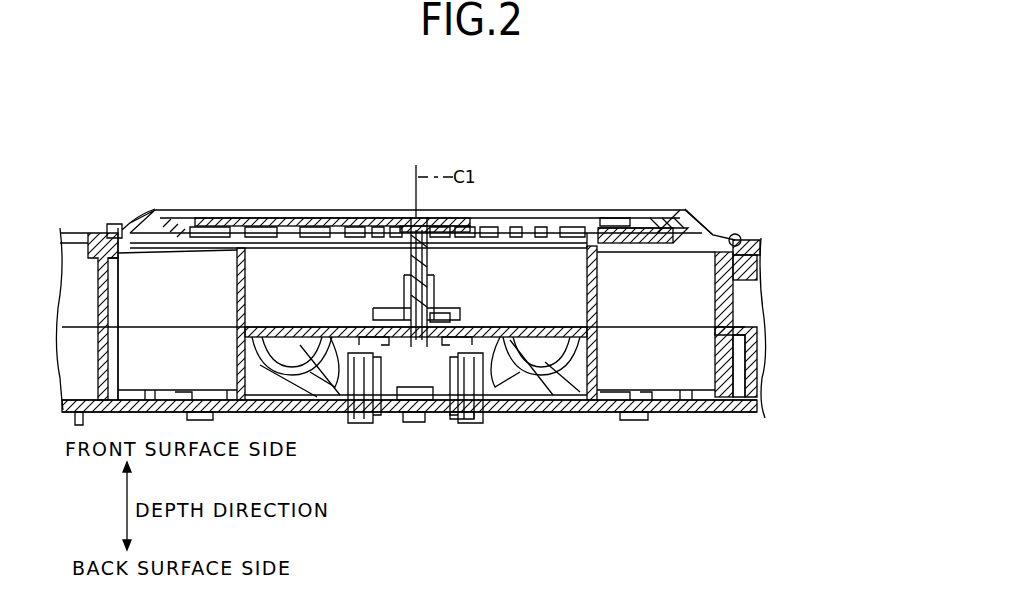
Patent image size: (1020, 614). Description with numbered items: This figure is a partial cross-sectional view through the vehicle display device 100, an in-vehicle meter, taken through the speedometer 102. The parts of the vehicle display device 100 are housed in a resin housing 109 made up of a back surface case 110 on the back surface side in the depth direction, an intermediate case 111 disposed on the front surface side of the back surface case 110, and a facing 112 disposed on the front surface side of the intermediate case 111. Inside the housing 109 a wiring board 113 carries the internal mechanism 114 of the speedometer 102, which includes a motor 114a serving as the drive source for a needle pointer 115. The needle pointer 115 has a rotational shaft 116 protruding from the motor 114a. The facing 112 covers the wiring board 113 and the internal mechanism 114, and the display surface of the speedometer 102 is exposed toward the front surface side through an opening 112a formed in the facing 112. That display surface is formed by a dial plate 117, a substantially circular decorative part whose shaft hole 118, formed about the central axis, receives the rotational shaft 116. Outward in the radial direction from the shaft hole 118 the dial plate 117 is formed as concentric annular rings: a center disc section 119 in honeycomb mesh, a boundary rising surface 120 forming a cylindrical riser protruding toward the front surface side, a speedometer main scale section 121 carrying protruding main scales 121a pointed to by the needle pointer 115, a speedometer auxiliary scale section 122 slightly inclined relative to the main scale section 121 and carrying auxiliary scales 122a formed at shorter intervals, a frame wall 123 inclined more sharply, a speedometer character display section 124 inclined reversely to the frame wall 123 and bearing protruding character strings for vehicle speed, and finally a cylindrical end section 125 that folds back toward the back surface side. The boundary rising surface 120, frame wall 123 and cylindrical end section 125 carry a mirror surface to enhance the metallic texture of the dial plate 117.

The vehicle display device 100 is at (177, 190).
The speedometer 102 is at (520, 207).
The housing 109 is at (832, 213).
The back surface case 110 is at (769, 354).
The intermediate case 111 is at (765, 270).
The facing 112 is at (759, 235).
The opening 112a is at (718, 222).
The wiring board 113 is at (598, 420).
The internal mechanism 114 is at (441, 382).
The motor 114a is at (401, 406).
The needle pointer 115 is at (222, 210).
The rotational shaft 116 is at (430, 262).
The dial plate 117 is at (690, 200).
The shaft hole 118 is at (395, 210).
The center disc section 119 is at (341, 210).
The boundary rising surface 120 is at (372, 210).
The speedometer main scale section 121 is at (590, 215).
The main scales 121a is at (630, 215).
The speedometer auxiliary scale section 122 is at (559, 215).
The auxiliary scales 122a is at (327, 210).
The frame wall 123 is at (598, 215).
The speedometer character display section 124 is at (700, 220).
The cylindrical end section 125 is at (95, 211).